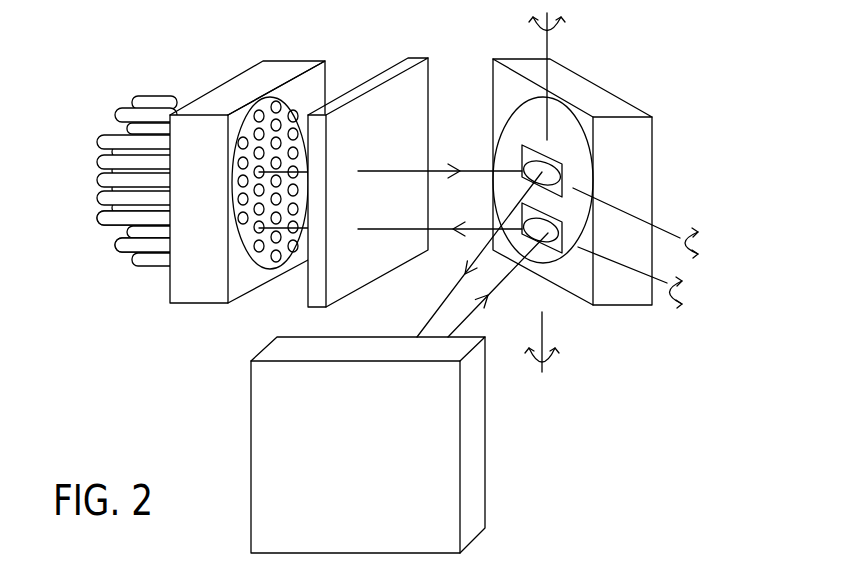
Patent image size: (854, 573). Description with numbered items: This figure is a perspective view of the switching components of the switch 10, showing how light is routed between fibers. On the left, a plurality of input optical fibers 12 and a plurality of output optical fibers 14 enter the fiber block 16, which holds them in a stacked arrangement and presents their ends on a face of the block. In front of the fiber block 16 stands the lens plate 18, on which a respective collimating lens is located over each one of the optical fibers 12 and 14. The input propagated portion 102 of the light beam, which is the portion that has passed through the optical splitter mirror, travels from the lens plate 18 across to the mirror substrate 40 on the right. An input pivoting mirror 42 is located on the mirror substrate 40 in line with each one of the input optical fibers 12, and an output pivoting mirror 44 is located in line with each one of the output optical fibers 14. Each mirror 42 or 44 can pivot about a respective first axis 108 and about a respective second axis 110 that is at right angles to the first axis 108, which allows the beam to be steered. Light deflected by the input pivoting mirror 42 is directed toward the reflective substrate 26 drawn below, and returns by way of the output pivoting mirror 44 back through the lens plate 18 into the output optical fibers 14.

The switch 10 is at (122, 68).
The input optical fibers 12 is at (118, 116).
The output optical fibers 14 is at (98, 216).
The fiber block 16 is at (288, 63).
The lens plate 18 is at (409, 60).
The reflective substrate 26 is at (471, 442).
The mirror substrate 40 is at (603, 96).
The input pivoting mirror 42 is at (563, 183).
The output pivoting mirror 44 is at (548, 240).
The input propagated portion 102 is at (453, 237).
The first axis 108 is at (547, 47).
The second axis 110 is at (668, 224).